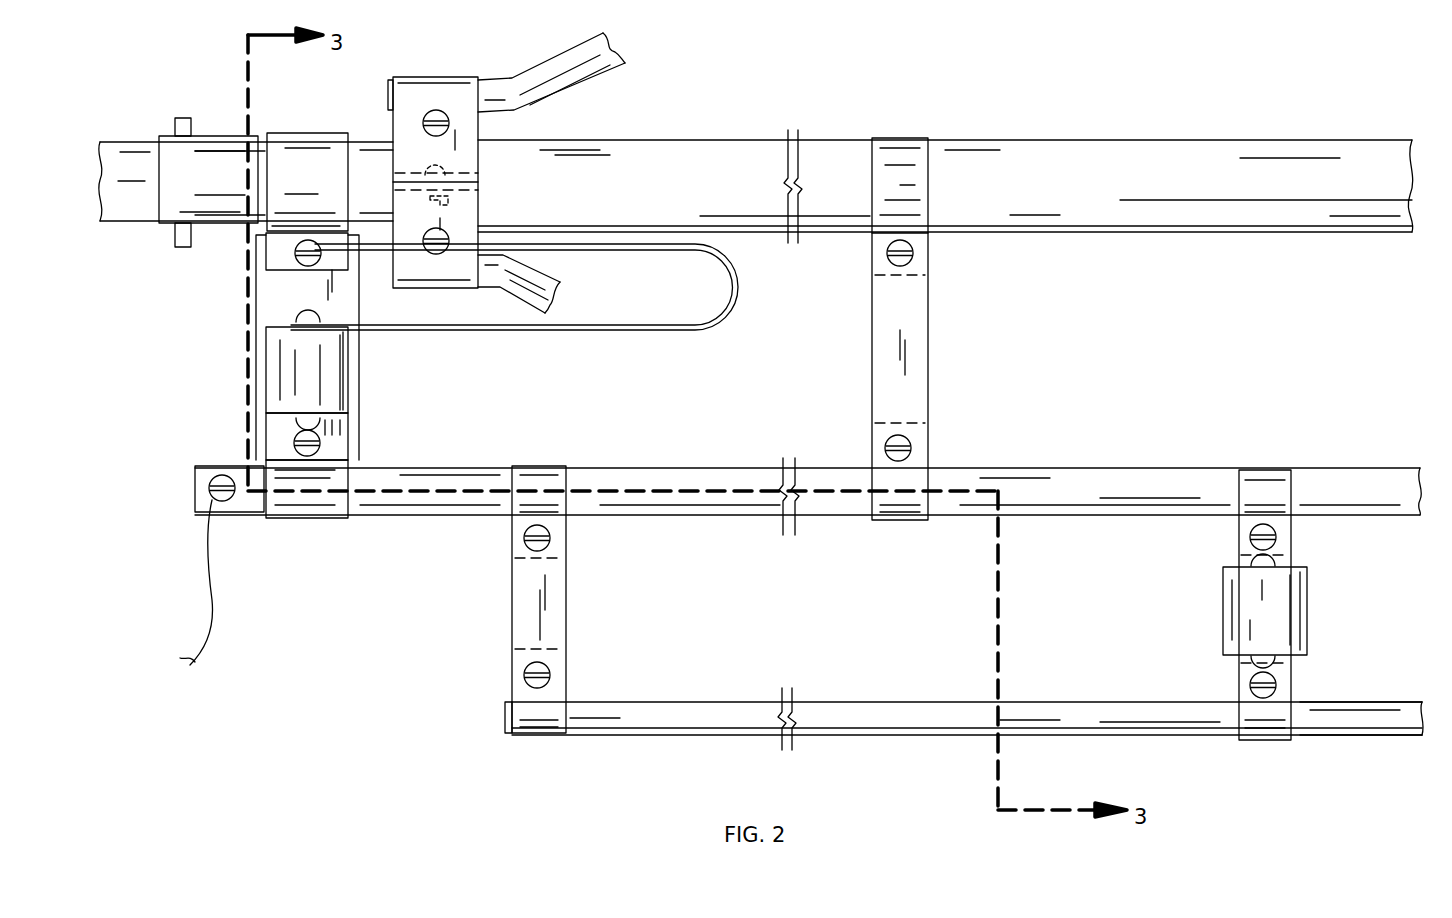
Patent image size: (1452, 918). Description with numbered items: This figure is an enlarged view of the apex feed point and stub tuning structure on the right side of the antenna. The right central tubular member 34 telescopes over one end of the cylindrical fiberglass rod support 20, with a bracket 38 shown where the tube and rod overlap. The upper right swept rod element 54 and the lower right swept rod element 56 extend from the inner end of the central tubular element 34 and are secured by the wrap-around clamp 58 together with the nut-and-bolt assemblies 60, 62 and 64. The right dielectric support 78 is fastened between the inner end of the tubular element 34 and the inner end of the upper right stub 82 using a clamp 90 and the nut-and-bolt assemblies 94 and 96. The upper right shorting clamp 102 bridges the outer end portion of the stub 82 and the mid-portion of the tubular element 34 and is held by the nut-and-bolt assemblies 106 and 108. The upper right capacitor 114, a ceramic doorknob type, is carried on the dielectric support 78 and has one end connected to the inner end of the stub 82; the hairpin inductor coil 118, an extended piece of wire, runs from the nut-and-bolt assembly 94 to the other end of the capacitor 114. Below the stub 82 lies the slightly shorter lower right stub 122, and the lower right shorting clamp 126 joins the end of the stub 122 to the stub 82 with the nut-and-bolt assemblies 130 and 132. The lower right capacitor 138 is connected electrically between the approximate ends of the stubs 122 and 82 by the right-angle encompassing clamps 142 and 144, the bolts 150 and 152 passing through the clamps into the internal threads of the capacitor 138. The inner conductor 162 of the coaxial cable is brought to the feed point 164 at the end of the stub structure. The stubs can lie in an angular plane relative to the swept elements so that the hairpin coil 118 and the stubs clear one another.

The cylindrical fiberglass rod support 20 is at (133, 141).
The right central tubular member 34 is at (654, 141).
The bracket 38 is at (191, 120).
The upper right swept rod element 54 is at (547, 64).
The lower right swept rod element 56 is at (548, 278).
The clamp 58 is at (428, 77).
The nut-and-bolt assembly 60 is at (430, 112).
The nut-and-bolt assembly 62 is at (432, 253).
The nut-and-bolt assembly 64 is at (455, 173).
The right dielectric support 78 is at (256, 306).
The upper right stub 82 is at (300, 133).
The clamp 90 is at (645, 468).
The nut-and-bolt assembly 94 is at (296, 259).
The nut-and-bolt assembly 96 is at (322, 452).
The upper right shorting clamp 102 is at (898, 138).
The nut-and-bolt assembly 106 is at (915, 259).
The nut-and-bolt assembly 108 is at (912, 446).
The upper right capacitor 114 is at (350, 380).
The inductor coil 118 is at (738, 286).
The lower right stub 122 is at (1153, 736).
The lower right shorting clamp 126 is at (541, 599).
The nut-and-bolt assembly 130 is at (523, 536).
The nut-and-bolt assembly 132 is at (522, 673).
The lower right capacitor 138 is at (1308, 603).
The right-angle encompassing clamp 142 is at (1280, 470).
The right-angle encompassing clamp 144 is at (1361, 743).
The bolt 150 is at (1276, 542).
The bolt 152 is at (1276, 681).
The inner conductor 162 is at (213, 576).
The feed point 164 is at (210, 488).